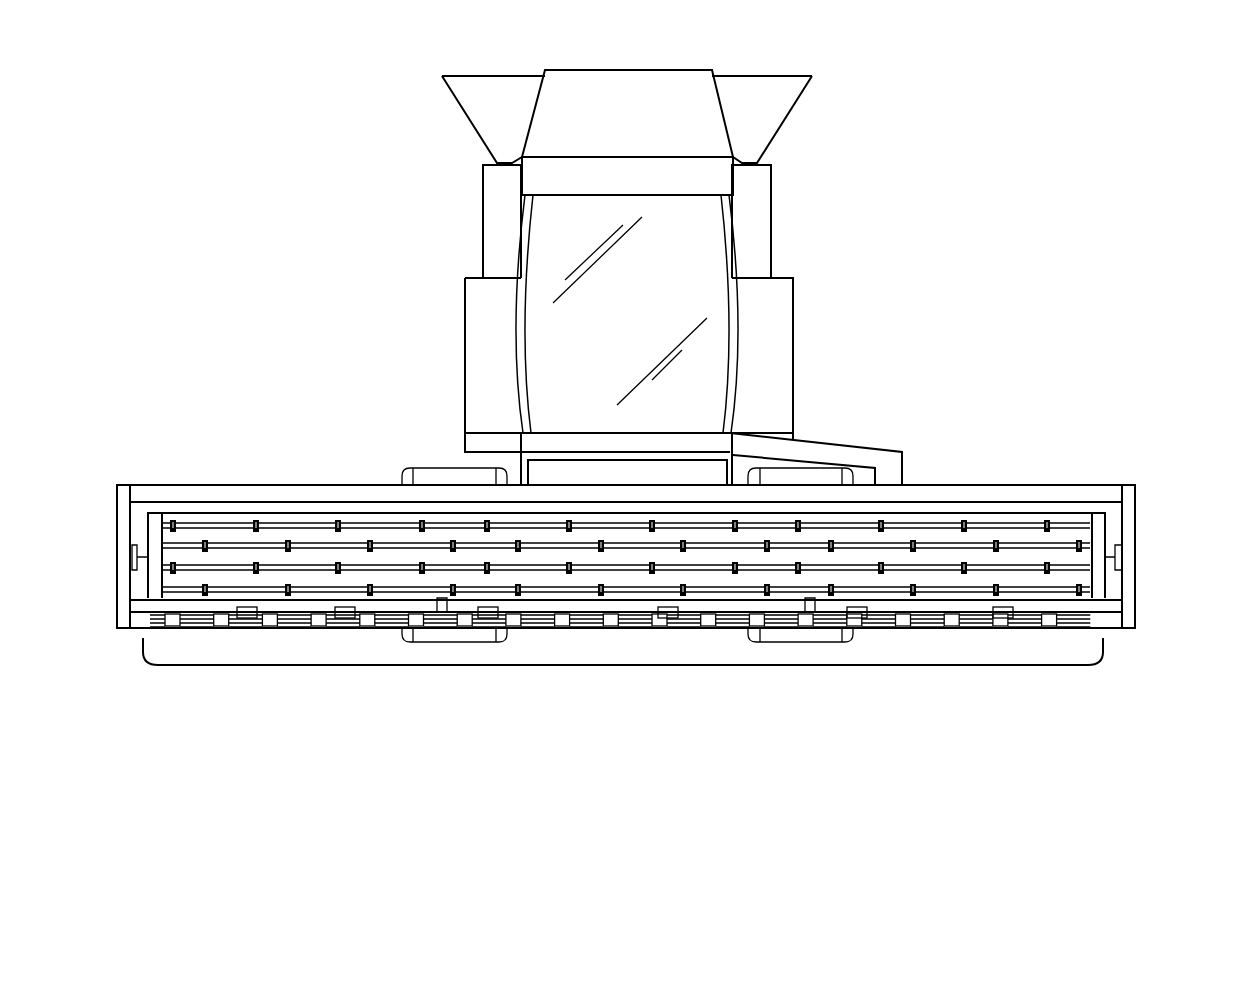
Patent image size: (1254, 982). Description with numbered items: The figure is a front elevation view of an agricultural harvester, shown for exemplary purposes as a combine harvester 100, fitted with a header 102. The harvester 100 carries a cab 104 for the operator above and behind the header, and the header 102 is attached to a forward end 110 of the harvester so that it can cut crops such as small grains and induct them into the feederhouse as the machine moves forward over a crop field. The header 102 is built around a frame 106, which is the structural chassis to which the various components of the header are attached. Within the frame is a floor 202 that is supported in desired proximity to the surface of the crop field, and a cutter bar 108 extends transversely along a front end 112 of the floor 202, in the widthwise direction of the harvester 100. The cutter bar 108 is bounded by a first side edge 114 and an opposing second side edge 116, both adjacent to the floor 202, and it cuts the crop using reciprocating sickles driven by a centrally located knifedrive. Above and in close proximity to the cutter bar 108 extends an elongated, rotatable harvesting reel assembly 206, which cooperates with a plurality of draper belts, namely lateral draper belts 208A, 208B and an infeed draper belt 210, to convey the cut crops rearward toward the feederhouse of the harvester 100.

The combine harvester 100 is at (322, 170).
The header 102 is at (1159, 418).
The cab 104 is at (780, 213).
The frame 106 is at (975, 484).
The cutter bar 108 is at (645, 665).
The forward end 110 is at (685, 472).
The front end 112 is at (713, 622).
The first side edge 114 is at (1137, 527).
The second side edge 116 is at (117, 540).
The floor 202 is at (812, 607).
The harvesting reel assembly 206 is at (292, 518).
The lateral draper belt 208A is at (953, 603).
The lateral draper belt 208B is at (198, 605).
The infeed draper belt 210 is at (535, 605).